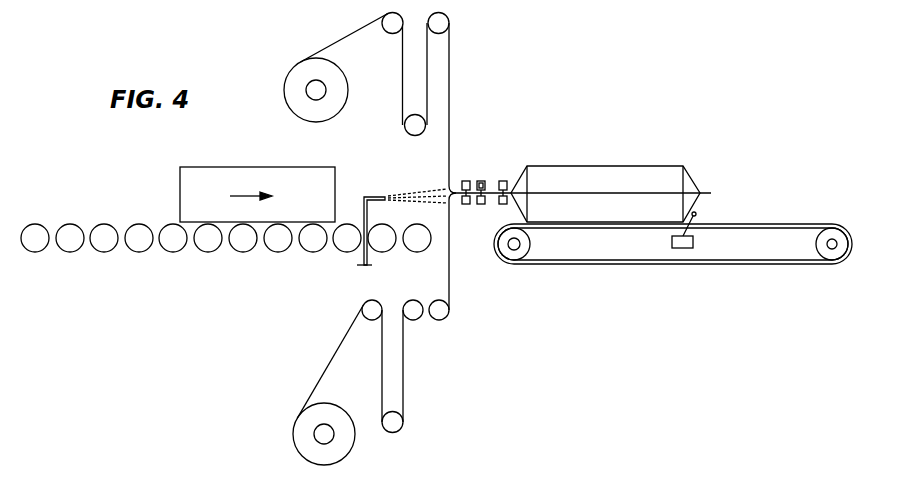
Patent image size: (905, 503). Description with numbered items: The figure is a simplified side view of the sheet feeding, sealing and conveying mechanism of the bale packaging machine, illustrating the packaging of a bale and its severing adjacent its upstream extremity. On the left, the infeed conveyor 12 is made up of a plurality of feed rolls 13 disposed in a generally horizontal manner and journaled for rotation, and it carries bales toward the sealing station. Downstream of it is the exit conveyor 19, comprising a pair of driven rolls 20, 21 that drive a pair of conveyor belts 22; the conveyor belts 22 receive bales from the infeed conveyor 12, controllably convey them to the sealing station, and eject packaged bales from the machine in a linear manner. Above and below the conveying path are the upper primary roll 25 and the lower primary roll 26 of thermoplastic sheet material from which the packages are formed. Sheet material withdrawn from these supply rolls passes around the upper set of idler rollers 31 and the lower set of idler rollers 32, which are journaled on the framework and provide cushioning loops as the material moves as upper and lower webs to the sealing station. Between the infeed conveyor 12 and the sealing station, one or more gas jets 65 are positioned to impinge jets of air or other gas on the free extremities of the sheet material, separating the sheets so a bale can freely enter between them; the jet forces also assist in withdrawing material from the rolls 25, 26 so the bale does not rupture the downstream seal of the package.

The infeed conveyor 12 is at (226, 243).
The feed rolls 13 is at (130, 251).
The exit conveyor 19 is at (673, 246).
The driven roll 20 is at (531, 251).
The driven roll 21 is at (822, 256).
The conveyor belts 22 is at (720, 265).
The upper primary roll 25 is at (297, 88).
The lower primary roll 26 is at (303, 444).
The upper set of idler rollers 31 is at (397, 25).
The lower set of idler rollers 32 is at (375, 315).
The gas jets 65 is at (370, 193).